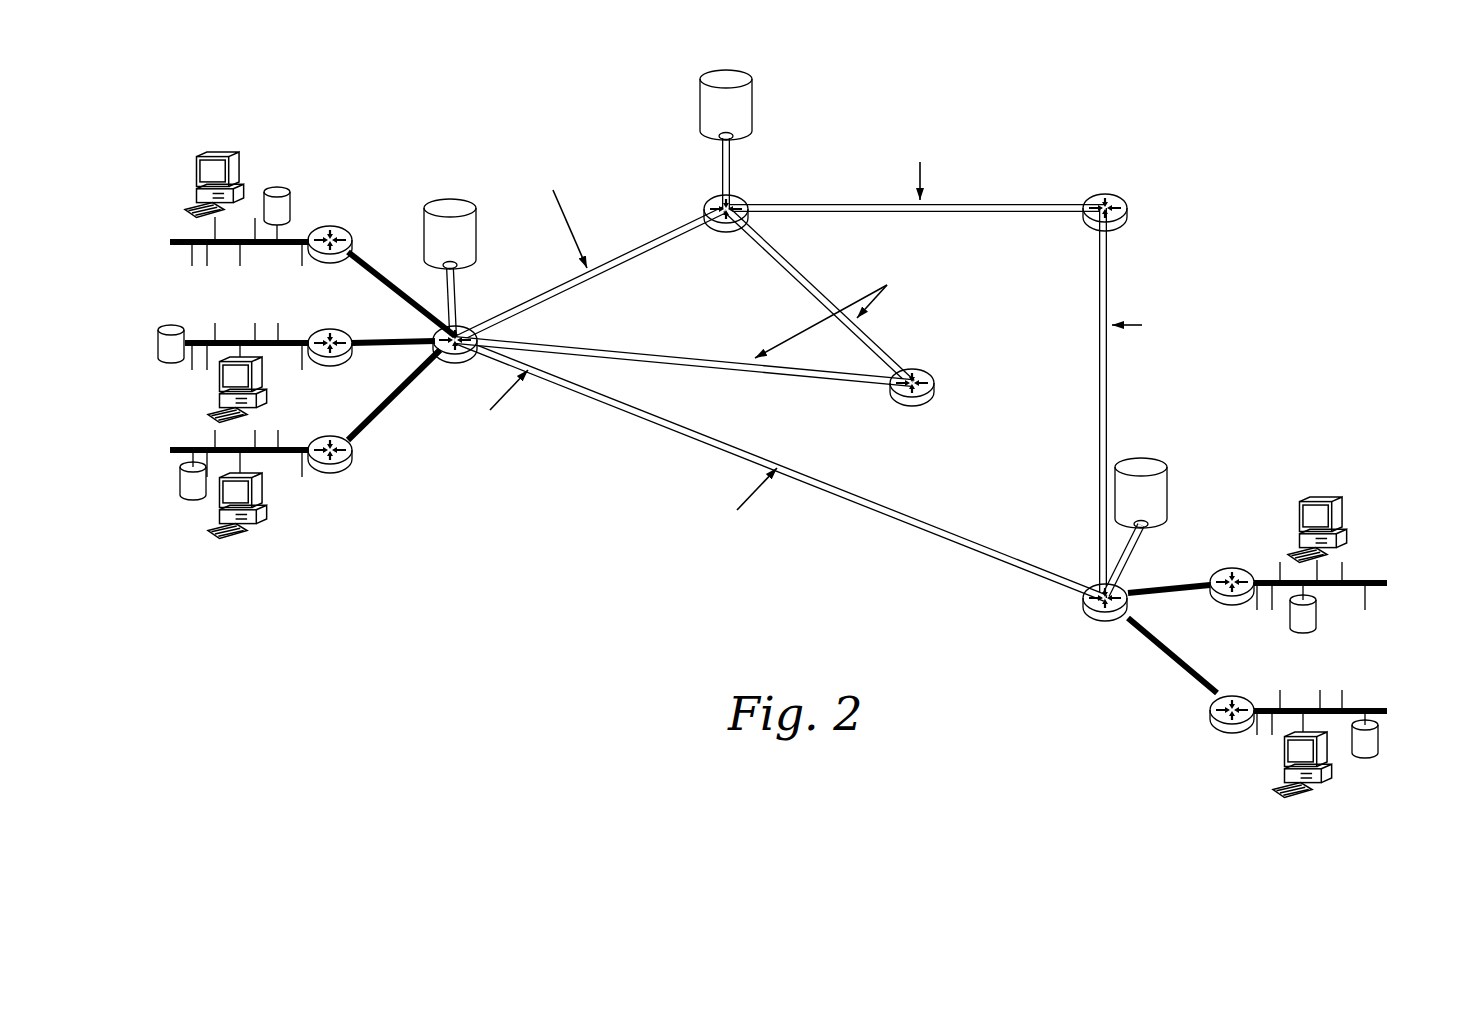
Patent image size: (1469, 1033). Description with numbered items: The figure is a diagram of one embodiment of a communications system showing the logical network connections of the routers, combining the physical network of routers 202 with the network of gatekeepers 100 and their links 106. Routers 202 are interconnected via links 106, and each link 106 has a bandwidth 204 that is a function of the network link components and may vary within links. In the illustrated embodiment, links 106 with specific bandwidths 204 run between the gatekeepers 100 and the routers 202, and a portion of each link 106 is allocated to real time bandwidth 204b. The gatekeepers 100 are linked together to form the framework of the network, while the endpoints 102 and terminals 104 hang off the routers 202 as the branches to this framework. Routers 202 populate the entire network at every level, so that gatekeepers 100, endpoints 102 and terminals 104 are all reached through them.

The gatekeeper 100 is at (478, 254).
The endpoint 102 is at (280, 192).
The terminal 104 is at (200, 172).
The link 106 is at (797, 378).
The router 202 is at (455, 358).
The bandwidth 204 is at (538, 128).
The real time bandwidth 204b is at (755, 570).